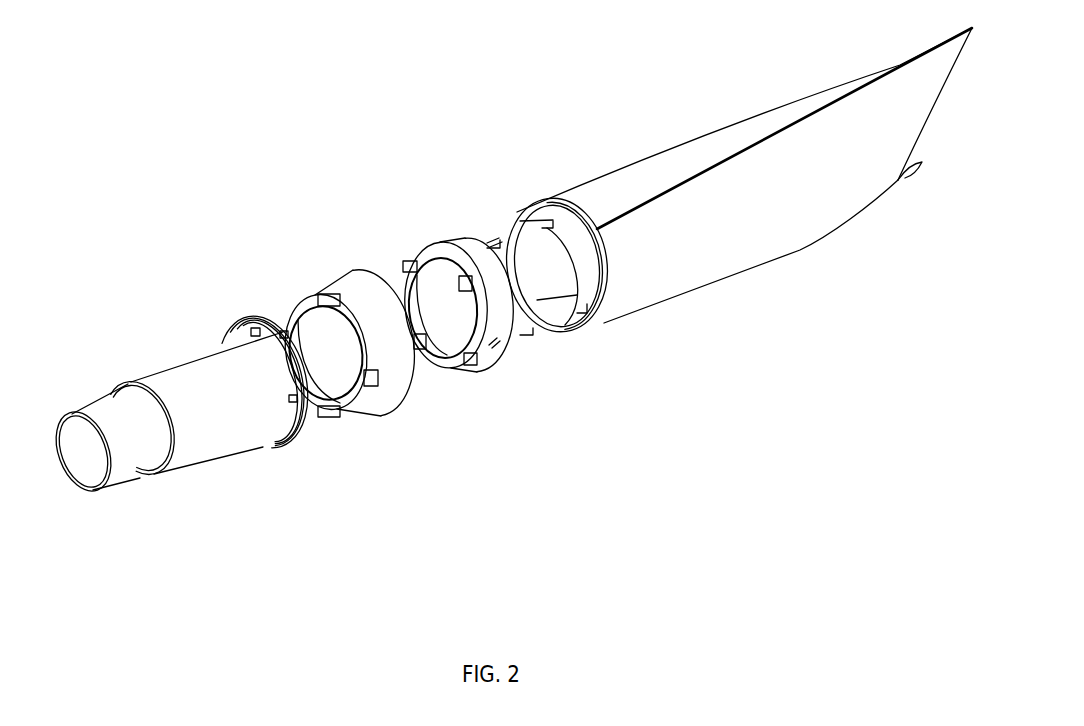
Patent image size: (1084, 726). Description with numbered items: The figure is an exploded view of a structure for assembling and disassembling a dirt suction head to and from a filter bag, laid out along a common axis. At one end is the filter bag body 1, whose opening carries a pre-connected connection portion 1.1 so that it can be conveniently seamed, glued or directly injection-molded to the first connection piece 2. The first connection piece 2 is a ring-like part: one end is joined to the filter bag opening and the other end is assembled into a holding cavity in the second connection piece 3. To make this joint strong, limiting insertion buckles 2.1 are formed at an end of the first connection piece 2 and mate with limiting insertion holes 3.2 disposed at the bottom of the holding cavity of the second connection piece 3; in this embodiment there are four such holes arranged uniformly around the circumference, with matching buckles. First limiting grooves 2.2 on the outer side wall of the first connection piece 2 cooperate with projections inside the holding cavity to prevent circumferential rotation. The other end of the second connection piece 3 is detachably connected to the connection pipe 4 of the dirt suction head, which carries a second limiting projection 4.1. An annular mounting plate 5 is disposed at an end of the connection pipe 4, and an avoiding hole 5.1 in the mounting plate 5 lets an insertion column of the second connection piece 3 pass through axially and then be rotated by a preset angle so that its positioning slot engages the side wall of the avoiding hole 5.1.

The filter bag body 1 is at (753, 238).
The connection portion 1.1 is at (590, 332).
The first connection piece 2 is at (464, 297).
The limiting insertion buckle 2.1 is at (412, 263).
The first limiting groove 2.2 is at (467, 253).
The second connection piece 3 is at (351, 339).
The limiting insertion hole 3.2 is at (332, 295).
The connection pipe 4 is at (225, 438).
The second limiting projection 4.1 is at (291, 398).
The mounting plate 5 is at (257, 380).
The avoiding hole 5.1 is at (288, 442).